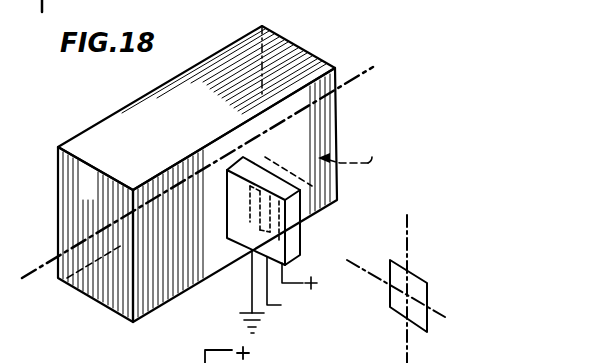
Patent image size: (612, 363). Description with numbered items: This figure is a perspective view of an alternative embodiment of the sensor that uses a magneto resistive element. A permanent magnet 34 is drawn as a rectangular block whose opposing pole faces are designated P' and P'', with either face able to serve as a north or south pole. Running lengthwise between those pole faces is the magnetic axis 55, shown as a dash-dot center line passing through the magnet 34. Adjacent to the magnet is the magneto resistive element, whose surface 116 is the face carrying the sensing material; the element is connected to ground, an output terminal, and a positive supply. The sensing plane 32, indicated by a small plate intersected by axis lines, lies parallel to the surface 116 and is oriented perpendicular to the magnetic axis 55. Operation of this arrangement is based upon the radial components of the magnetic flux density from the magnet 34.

The permanent magnet 34 is at (177, 293).
The magnetic axis 55 is at (358, 73).
The surface 116 is at (233, 212).
The sensing plane 32 is at (390, 300).